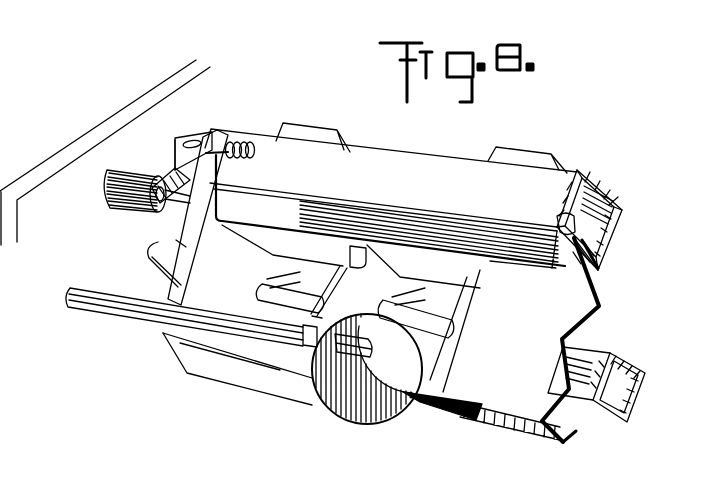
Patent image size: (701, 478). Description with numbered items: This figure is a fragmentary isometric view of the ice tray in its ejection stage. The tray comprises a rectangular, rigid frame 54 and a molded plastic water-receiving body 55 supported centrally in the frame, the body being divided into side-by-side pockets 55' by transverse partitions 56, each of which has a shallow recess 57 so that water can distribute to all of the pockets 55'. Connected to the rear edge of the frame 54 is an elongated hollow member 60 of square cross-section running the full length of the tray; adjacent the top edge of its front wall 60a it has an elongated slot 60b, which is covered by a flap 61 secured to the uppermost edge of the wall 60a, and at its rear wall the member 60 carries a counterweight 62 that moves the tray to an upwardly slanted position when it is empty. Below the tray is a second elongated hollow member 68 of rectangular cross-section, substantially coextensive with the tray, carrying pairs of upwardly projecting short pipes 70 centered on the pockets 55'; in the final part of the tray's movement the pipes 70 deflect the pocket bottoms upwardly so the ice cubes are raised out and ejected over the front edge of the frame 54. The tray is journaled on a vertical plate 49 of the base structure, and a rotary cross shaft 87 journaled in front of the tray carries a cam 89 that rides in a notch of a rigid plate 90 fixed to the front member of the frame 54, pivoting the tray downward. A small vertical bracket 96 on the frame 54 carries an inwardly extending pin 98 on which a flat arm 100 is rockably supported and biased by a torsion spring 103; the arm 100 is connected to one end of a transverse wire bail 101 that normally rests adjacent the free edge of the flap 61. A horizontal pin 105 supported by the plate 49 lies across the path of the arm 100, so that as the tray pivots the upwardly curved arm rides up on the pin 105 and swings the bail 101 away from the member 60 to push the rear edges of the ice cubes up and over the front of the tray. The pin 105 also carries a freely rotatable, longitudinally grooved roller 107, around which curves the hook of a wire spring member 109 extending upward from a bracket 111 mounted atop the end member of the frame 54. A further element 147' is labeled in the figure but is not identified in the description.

The vertical plate 49 is at (52, 166).
The frame 54 is at (592, 282).
The water-receiving body 55 is at (403, 286).
The pockets 55' is at (237, 376).
The transverse partitions 56 is at (478, 392).
The recess 57 is at (349, 254).
The hollow member 60 is at (600, 195).
The front wall 60a is at (582, 243).
The slot 60b is at (560, 218).
The flap 61 is at (403, 222).
The counterweight 62 is at (303, 126).
The hollow member 68 is at (641, 396).
The short pipes 70 is at (582, 382).
The cross shaft 87 is at (137, 318).
The cam 89 is at (372, 418).
The rigid plate 90 is at (444, 418).
The vertical bracket 96 is at (182, 137).
The pin 98 is at (198, 143).
The flat arm 100 is at (188, 181).
The bail 101 is at (433, 248).
The torsion spring 103 is at (237, 142).
The horizontal pin 105 is at (183, 203).
The grooved roller 107 is at (108, 200).
The wire spring member 109 is at (147, 255).
The bracket 111 is at (185, 245).
The member 147' is at (303, 469).